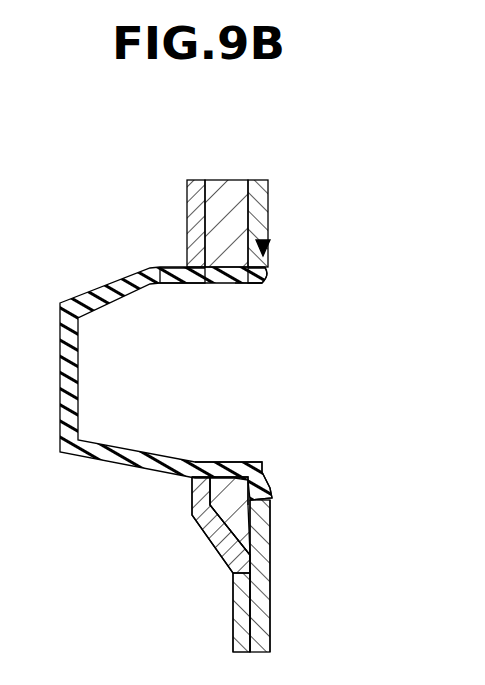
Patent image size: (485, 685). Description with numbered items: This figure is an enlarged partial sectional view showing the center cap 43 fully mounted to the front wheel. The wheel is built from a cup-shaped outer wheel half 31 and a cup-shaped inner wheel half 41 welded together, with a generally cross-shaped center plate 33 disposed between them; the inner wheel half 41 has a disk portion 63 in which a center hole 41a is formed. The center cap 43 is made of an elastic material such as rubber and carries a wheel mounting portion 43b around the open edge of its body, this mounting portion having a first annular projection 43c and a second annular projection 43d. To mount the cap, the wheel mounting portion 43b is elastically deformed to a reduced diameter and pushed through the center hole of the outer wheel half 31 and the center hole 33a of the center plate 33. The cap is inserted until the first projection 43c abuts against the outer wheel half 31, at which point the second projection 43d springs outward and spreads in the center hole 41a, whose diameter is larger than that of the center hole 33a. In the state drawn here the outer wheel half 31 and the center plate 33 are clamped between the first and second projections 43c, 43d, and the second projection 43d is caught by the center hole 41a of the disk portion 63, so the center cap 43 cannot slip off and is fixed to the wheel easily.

The outer wheel half 31 is at (185, 198).
The center plate 33 is at (229, 183).
The center hole of center plate 33a is at (226, 462).
The inner wheel half 41 is at (272, 198).
The center hole of inner wheel half 41a is at (270, 248).
The center cap 43 is at (72, 296).
The wheel mounting portion 43b is at (234, 290).
The first annular projection 43c is at (180, 265).
The second annular projection 43d is at (268, 272).
The disk portion 63 is at (272, 552).